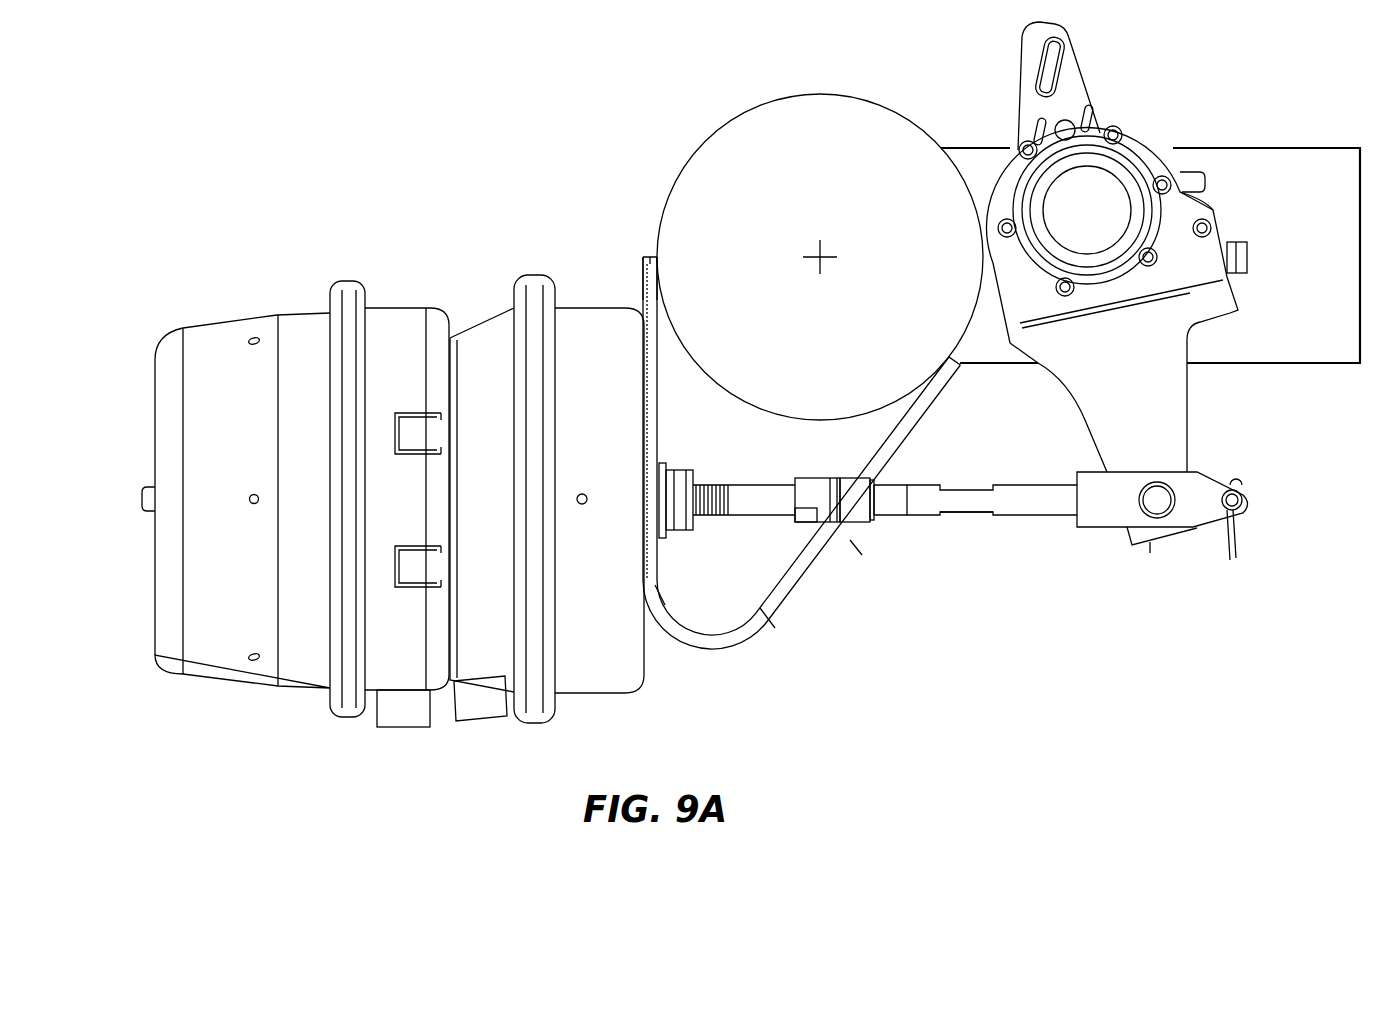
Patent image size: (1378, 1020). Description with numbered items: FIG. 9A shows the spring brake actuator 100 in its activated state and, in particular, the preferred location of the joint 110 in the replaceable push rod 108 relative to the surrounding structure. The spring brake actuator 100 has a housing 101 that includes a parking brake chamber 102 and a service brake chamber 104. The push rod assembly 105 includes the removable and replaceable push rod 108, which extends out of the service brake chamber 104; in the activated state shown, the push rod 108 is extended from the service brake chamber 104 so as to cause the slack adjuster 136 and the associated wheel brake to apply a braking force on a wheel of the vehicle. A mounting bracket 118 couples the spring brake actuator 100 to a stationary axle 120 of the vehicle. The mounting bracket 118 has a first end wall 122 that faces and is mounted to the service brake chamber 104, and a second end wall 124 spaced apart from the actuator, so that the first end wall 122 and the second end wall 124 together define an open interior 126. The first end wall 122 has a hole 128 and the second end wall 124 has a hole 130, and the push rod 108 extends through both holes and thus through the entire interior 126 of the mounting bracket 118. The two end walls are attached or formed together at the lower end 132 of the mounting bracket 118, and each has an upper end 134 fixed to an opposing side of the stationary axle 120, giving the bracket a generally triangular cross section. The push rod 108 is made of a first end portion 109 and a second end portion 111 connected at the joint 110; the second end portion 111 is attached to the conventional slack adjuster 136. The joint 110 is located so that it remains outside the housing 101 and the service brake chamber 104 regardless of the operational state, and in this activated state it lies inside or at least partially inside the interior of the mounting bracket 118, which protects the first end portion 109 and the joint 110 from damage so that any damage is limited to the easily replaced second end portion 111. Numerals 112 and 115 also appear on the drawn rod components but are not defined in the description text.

The spring brake actuator 100 is at (236, 488).
The housing 101 is at (257, 688).
The parking brake chamber 102 is at (412, 316).
The service brake chamber 104 is at (491, 323).
The push rod assembly 105 is at (851, 539).
The push rod 108 is at (972, 495).
The first end portion 109 is at (767, 492).
The joint 110 is at (839, 462).
The second end portion 111 is at (1042, 490).
The coupling 112 is at (860, 518).
The push rod neck 115 is at (968, 515).
The mounting bracket 118 is at (671, 655).
The stationary axle 120 is at (830, 93).
The first end wall 122 is at (792, 482).
The second end wall 124 is at (942, 387).
The open interior 126 is at (740, 570).
The hole 128 is at (663, 452).
The hole 130 is at (879, 476).
The lower end 132 is at (833, 487).
The upper end 134 is at (650, 258).
The slack adjuster 136 is at (1166, 126).